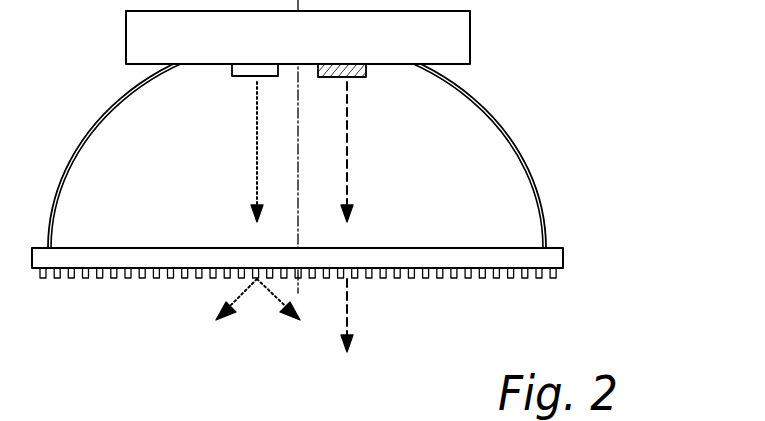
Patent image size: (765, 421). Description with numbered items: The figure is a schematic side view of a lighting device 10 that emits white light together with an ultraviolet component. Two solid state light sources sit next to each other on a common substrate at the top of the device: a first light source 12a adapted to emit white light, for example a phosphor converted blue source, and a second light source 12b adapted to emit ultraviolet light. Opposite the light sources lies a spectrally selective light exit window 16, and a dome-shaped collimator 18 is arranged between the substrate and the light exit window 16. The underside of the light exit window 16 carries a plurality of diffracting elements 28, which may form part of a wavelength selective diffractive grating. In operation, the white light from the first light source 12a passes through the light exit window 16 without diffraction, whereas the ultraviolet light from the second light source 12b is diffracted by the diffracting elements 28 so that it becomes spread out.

The lighting device 10 is at (351, 176).
The first light source 12a is at (366, 68).
The second light source 12b is at (232, 67).
The light exit window 16 is at (564, 258).
The collimator 18 is at (543, 207).
The diffracting elements 28 is at (440, 279).